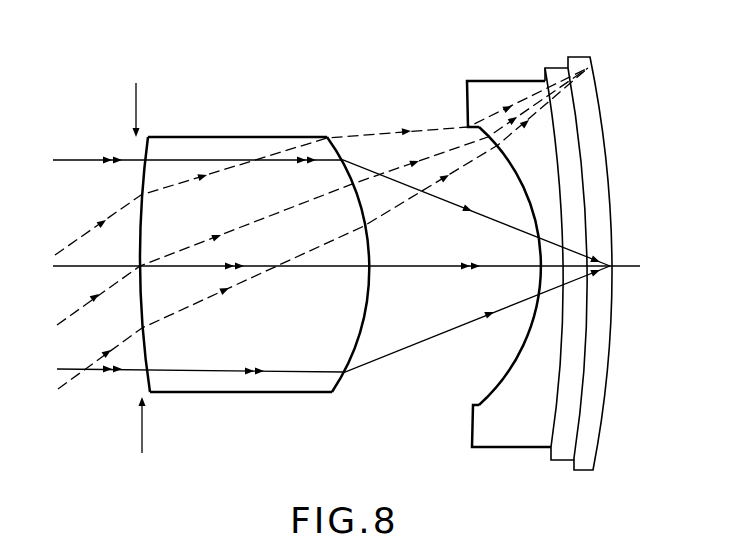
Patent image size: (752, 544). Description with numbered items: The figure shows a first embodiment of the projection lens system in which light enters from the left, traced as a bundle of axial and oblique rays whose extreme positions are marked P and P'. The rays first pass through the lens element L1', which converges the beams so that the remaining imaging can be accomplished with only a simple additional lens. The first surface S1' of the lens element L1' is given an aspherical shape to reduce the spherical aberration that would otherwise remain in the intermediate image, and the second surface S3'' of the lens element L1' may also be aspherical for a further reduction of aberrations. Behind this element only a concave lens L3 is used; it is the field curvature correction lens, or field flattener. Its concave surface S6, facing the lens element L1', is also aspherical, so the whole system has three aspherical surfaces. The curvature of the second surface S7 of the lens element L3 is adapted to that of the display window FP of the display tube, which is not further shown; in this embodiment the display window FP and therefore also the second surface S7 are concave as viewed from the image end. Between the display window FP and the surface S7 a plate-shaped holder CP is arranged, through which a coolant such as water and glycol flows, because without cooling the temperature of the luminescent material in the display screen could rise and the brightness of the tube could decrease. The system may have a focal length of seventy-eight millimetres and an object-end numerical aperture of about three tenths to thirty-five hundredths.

The entrance pupil position P is at (142, 110).
The entrance pupil position (lower) P' is at (149, 425).
The lens element L1' is at (226, 290).
The first surface S1' is at (116, 275).
The second surface S3'' is at (348, 278).
The concave lens L3 is at (554, 278).
The concave surface S6 is at (496, 391).
The second surface S7 is at (558, 393).
The plate-shaped holder CP is at (562, 450).
The display window FP is at (587, 462).